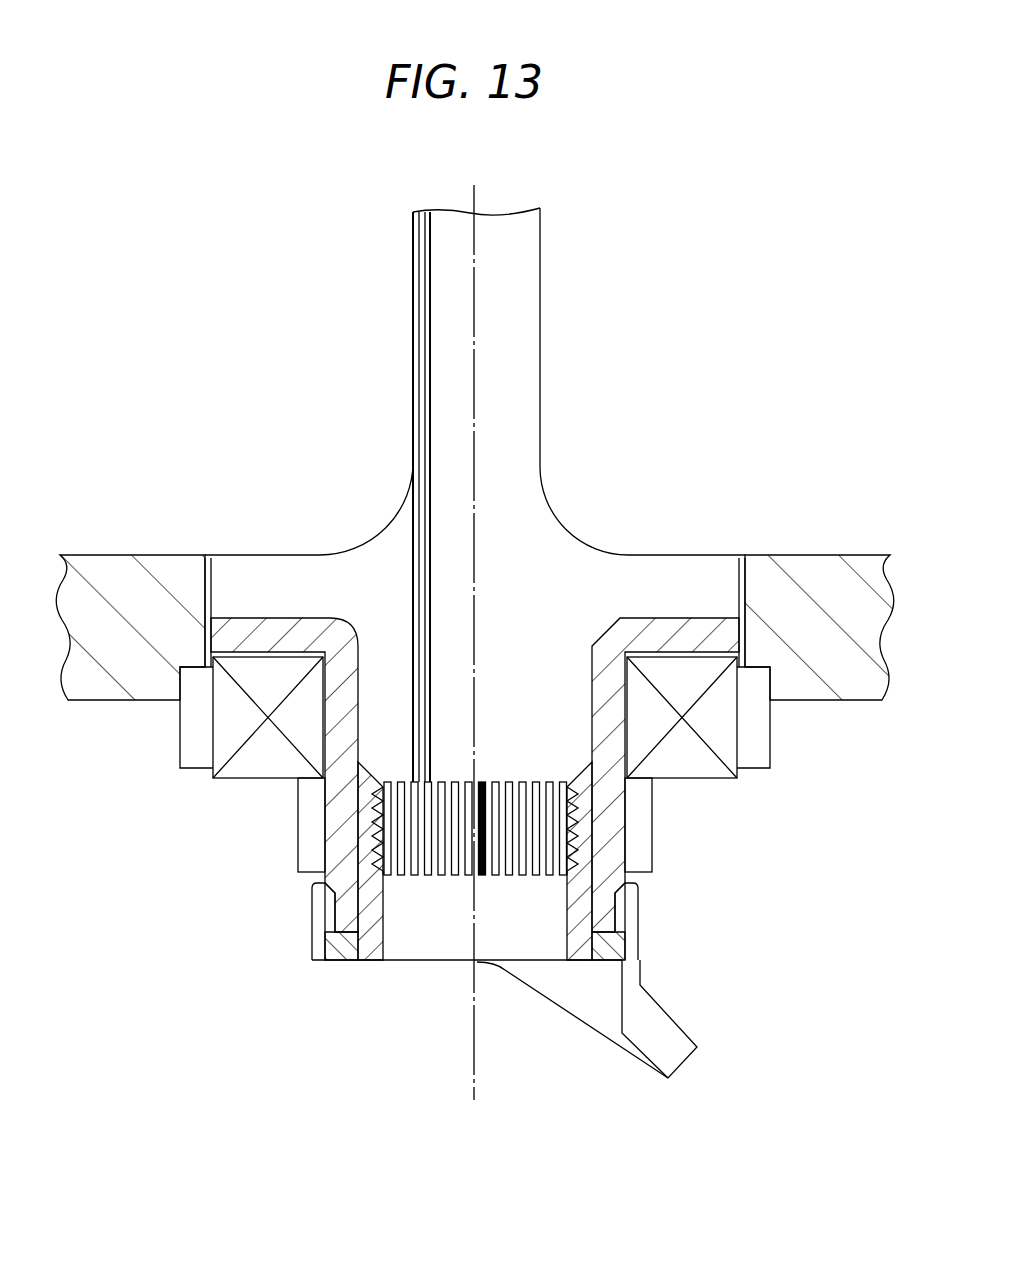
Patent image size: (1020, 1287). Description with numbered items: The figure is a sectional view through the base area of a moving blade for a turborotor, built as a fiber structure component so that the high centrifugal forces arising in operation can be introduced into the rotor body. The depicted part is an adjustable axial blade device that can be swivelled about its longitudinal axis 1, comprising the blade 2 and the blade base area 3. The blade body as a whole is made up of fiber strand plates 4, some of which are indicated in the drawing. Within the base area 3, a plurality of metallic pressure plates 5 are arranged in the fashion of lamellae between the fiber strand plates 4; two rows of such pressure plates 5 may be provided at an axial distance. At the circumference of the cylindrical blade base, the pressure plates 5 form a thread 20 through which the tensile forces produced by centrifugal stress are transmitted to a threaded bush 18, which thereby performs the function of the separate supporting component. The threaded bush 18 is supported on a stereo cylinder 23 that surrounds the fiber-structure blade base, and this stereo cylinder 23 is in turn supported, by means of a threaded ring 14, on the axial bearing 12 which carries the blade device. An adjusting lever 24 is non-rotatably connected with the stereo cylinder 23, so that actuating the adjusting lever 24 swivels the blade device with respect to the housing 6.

The longitudinal axis 1 is at (478, 350).
The blade 2 is at (541, 405).
The blade base area 3 is at (553, 633).
The fiber strand plates 4 is at (425, 445).
The pressure plates 5 is at (420, 822).
The housing 6 is at (801, 578).
The axial bearing 12 is at (198, 735).
The threaded ring 14 is at (305, 857).
The threaded bush 18 is at (365, 948).
The thread 20 is at (592, 866).
The stereo cylinder 23 is at (608, 804).
The adjusting lever 24 is at (678, 1046).